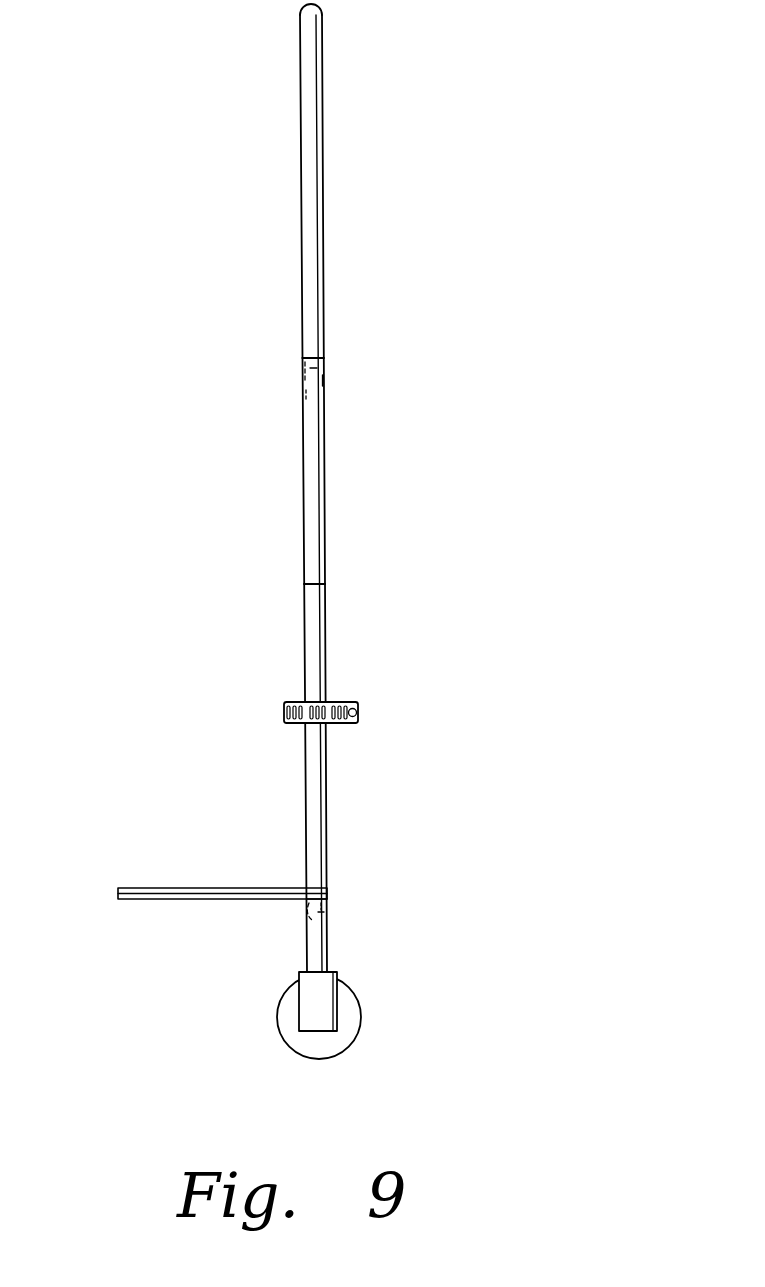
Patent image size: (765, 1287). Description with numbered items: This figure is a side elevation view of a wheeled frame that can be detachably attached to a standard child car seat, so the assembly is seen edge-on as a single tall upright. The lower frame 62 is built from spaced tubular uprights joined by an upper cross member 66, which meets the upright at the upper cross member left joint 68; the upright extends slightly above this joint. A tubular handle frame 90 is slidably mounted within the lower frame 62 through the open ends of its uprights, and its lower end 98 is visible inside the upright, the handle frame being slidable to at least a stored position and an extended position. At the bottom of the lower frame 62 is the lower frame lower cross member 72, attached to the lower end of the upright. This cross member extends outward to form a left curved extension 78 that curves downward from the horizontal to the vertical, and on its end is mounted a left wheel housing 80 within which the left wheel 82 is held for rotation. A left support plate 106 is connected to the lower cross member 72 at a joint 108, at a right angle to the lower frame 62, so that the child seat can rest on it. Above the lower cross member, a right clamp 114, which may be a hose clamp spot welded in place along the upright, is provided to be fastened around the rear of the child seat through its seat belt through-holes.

The tubular handle frame 90 is at (360, 158).
The upper cross member left joint 68 is at (324, 370).
The upper cross member 66 is at (320, 394).
The lower frame 62 is at (378, 543).
The lower end 98 is at (316, 586).
The left curved extension 78 is at (307, 933).
The right clamp 114 is at (345, 724).
The left support plate 106 is at (195, 888).
The joint 108 is at (307, 899).
The lower frame lower cross member 72 is at (325, 909).
The left wheel housing 80 is at (337, 977).
The left wheel 82 is at (348, 1040).